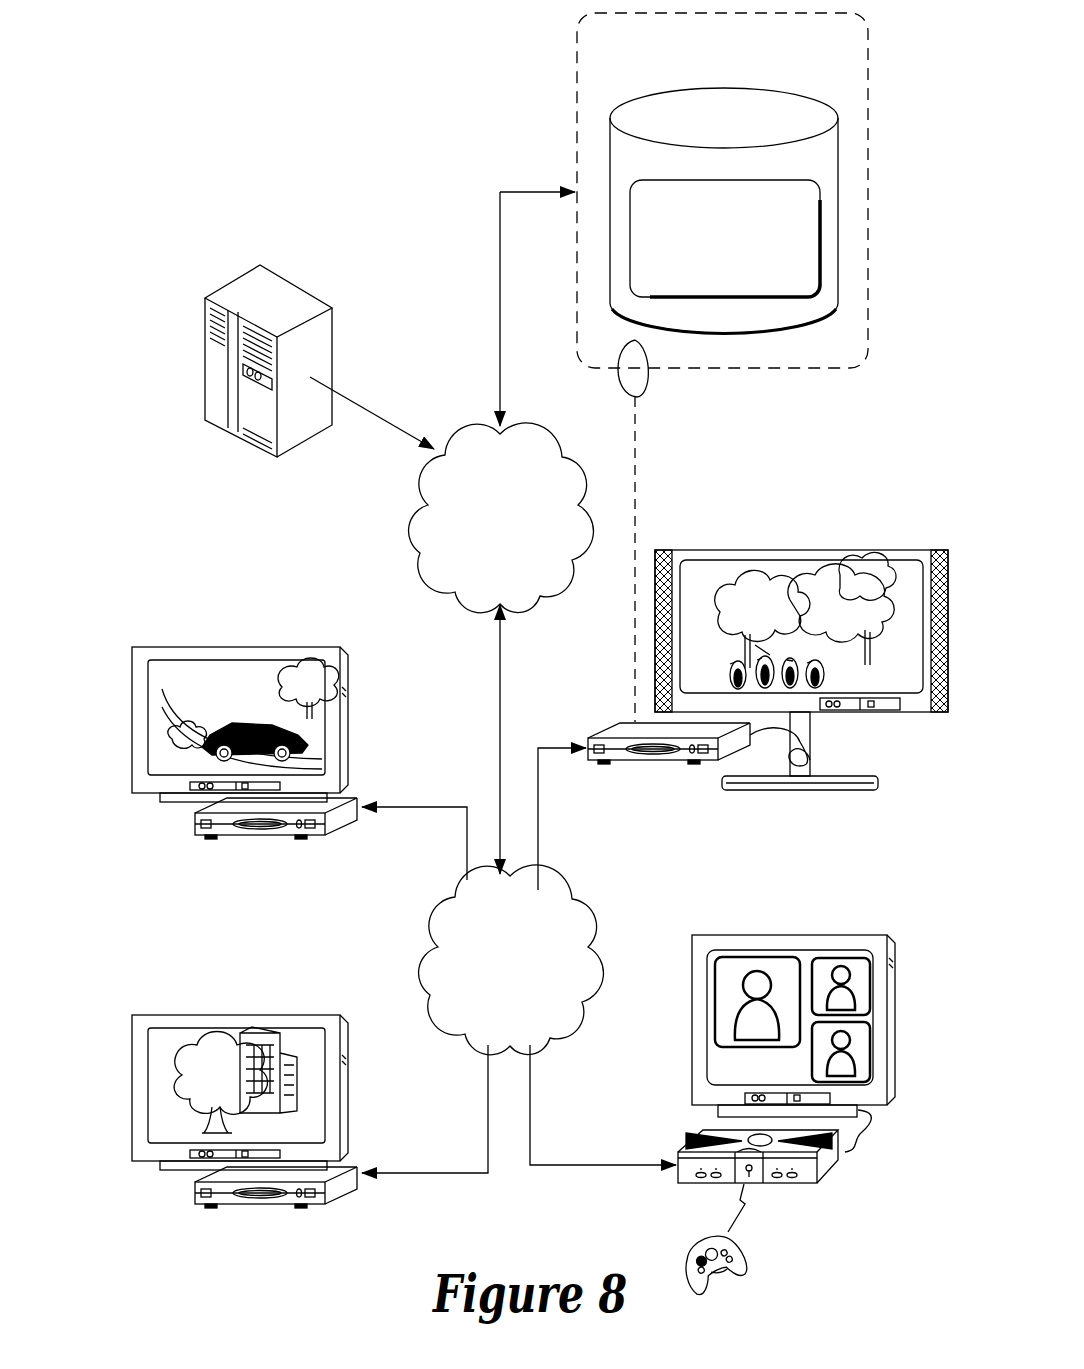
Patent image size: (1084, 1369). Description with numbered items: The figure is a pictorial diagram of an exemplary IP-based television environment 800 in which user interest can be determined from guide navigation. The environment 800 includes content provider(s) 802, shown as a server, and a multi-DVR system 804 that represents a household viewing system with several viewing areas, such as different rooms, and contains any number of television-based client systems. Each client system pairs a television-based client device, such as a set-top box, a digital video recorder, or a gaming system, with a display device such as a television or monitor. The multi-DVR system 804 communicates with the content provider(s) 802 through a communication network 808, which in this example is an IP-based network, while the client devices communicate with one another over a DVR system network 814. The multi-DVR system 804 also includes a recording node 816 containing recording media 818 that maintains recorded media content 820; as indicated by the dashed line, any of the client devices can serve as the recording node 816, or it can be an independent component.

The IP-based television (IPTV) environment 800 is at (289, 104).
The content provider(s) 802 is at (223, 328).
The multi-DVR system 804 is at (699, 456).
The communication network 808 is at (501, 518).
The DVR system network 814 is at (511, 960).
The recording node 816 is at (722, 190).
The recording media 818 is at (724, 210).
The recorded media content 820 is at (725, 238).